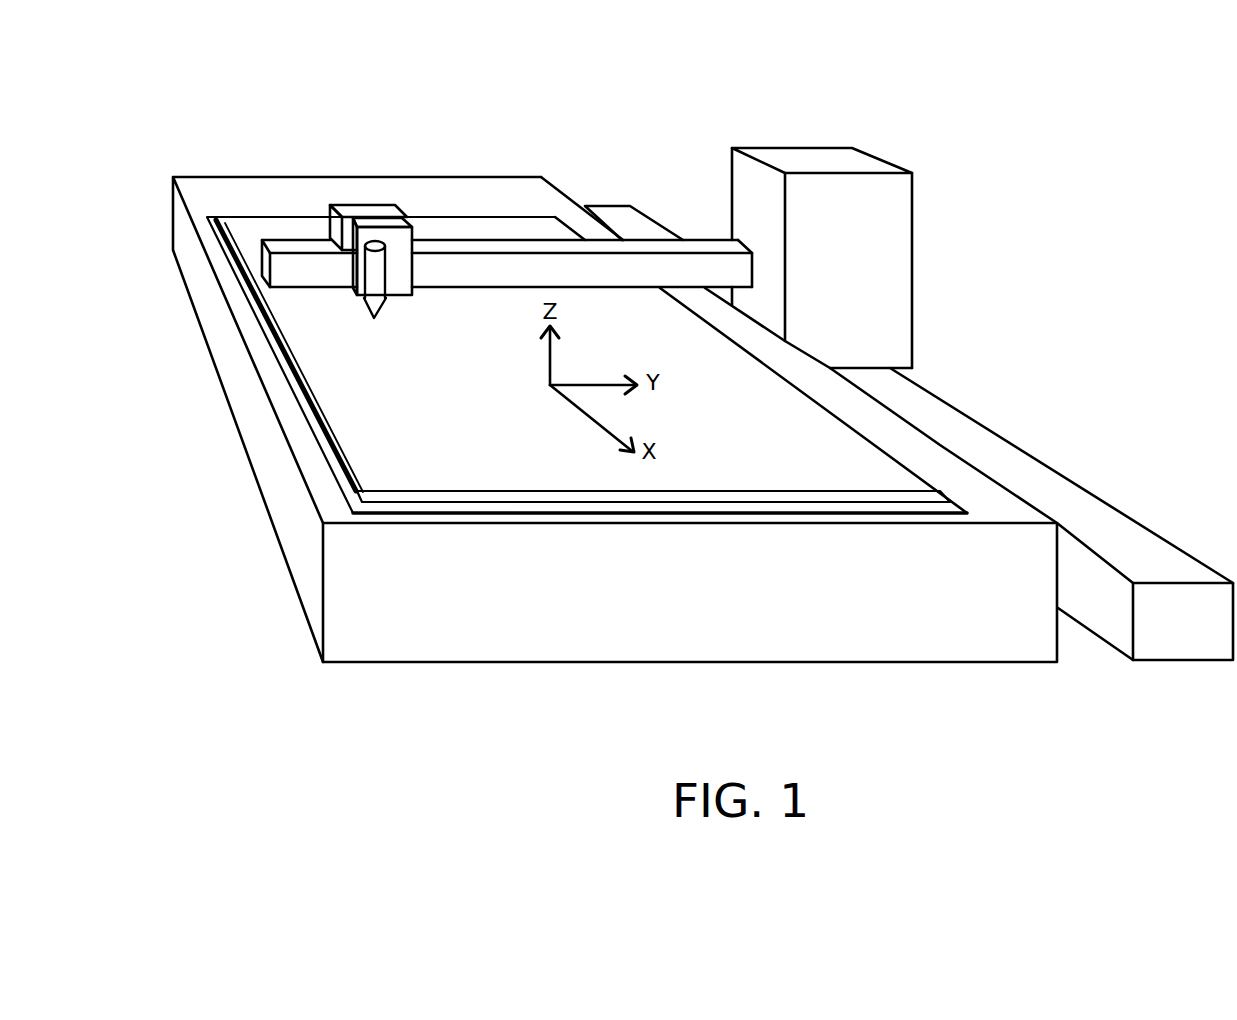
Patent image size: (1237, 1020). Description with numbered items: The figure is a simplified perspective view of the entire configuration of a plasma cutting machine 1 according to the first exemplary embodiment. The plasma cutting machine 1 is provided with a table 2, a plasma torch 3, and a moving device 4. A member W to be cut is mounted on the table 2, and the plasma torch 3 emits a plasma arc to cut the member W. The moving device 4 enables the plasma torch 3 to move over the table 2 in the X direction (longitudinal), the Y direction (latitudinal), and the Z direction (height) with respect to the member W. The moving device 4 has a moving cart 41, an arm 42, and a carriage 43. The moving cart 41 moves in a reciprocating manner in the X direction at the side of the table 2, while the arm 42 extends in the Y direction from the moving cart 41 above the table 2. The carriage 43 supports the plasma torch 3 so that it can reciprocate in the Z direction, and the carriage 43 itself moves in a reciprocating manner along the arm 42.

The plasma cutting machine 1 is at (648, 150).
The table 2 is at (432, 177).
The plasma torch 3 is at (386, 306).
The moving device 4 is at (909, 349).
The moving cart 41 is at (798, 148).
The arm 42 is at (443, 237).
The carriage 43 is at (355, 203).
The member to be cut W is at (280, 228).